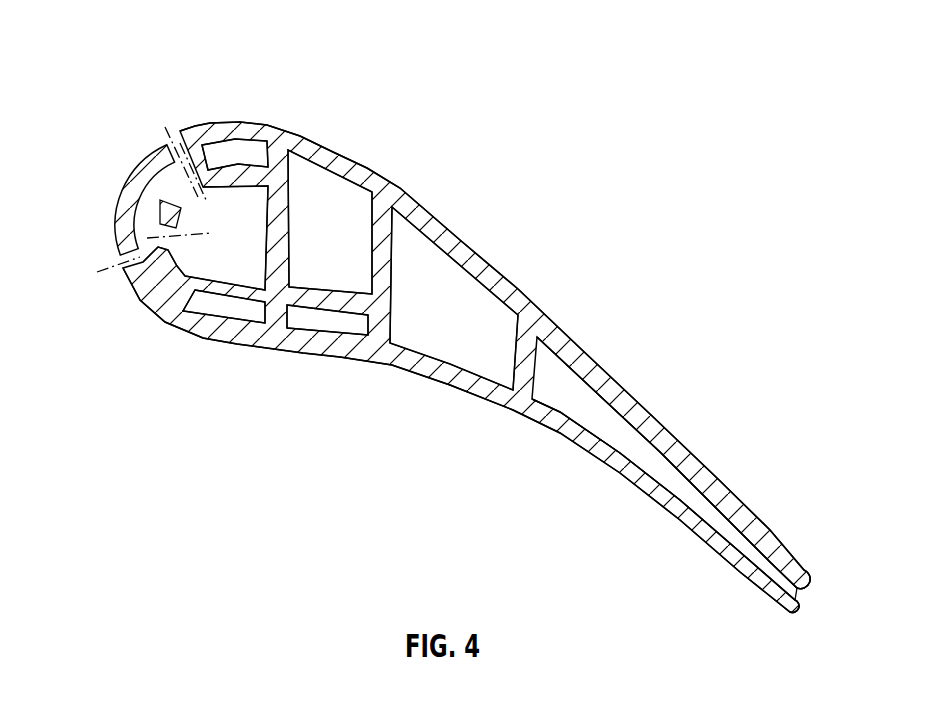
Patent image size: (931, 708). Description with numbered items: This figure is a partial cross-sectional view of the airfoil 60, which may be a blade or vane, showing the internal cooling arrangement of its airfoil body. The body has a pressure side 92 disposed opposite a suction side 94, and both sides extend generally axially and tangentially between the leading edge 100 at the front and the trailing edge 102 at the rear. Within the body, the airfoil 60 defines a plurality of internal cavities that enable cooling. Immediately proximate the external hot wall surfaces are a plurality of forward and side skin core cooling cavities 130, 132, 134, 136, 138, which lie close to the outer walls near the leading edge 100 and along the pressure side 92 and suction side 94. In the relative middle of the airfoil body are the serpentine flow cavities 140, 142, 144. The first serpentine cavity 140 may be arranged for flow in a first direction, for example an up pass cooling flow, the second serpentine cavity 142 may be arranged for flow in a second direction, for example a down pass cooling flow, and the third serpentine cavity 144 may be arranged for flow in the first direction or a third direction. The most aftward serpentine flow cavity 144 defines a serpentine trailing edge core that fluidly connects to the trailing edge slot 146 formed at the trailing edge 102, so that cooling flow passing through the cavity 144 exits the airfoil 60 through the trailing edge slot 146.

The airfoil 60 is at (150, 52).
The pressure side 92 is at (513, 410).
The suction side 94 is at (470, 242).
The leading edge 100 is at (120, 210).
The trailing edge 102 is at (803, 598).
The skin core cooling cavity 130 is at (224, 310).
The skin core cooling cavity 132 is at (314, 322).
The skin core cooling cavity 134 is at (162, 207).
The skin core cooling cavity 136 is at (252, 155).
The skin core cooling cavity 138 is at (248, 199).
The first serpentine cavity 140 is at (325, 186).
The second serpentine cavity 142 is at (471, 307).
The third serpentine cavity 144 is at (565, 386).
The trailing edge slot 146 is at (805, 606).